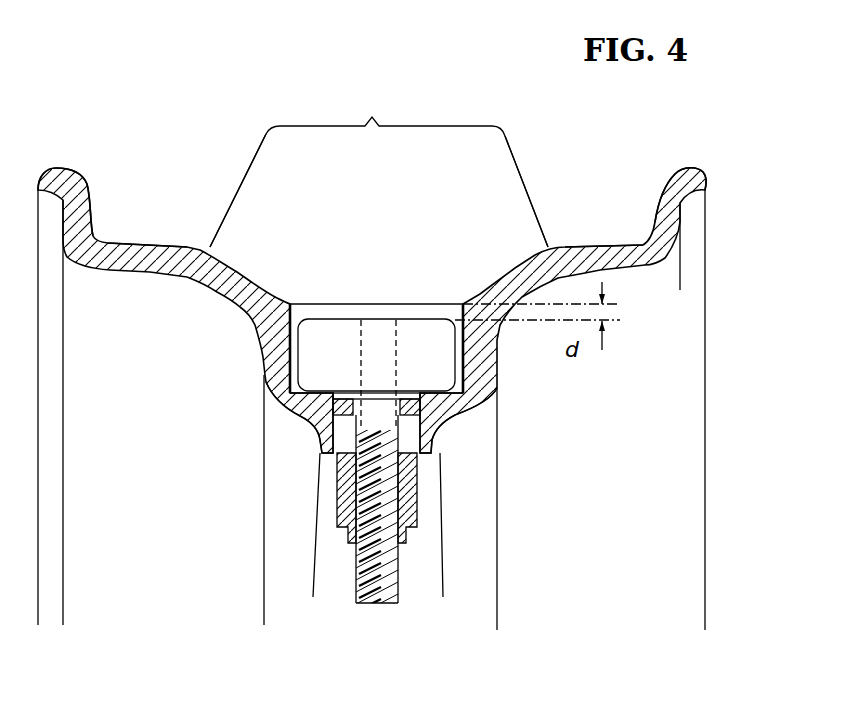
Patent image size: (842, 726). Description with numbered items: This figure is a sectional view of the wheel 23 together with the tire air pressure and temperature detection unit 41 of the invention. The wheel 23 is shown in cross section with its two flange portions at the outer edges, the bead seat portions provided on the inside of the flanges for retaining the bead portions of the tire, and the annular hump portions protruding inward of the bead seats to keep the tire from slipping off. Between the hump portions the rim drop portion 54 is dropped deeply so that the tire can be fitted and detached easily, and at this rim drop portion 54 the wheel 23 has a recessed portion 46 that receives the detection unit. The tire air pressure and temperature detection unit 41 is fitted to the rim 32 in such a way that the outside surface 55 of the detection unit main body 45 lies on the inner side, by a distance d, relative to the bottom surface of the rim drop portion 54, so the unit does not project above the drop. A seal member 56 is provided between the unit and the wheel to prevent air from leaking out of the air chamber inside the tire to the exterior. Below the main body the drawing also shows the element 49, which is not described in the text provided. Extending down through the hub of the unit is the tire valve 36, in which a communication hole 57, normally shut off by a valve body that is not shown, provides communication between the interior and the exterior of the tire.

The wheel 23 is at (240, 148).
The rim 32 is at (708, 220).
The tire valve 36 is at (372, 606).
The tire air pressure and temperature detection unit 41 is at (409, 298).
The air pressure and temperature detection unit main body 45 is at (314, 368).
The recessed portion 46 is at (300, 350).
The sleeve boss 49 is at (350, 531).
The rim drop portion 54 is at (414, 165).
The outside surface 55 is at (343, 318).
The seal member 56 is at (334, 402).
The communication hole 57 is at (372, 344).